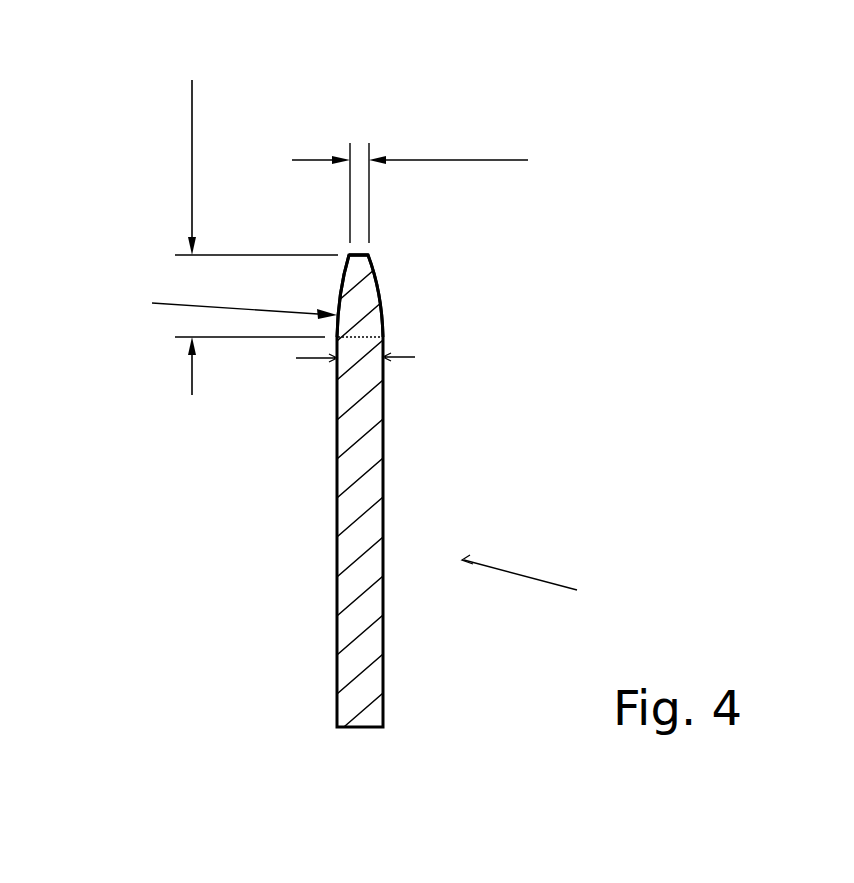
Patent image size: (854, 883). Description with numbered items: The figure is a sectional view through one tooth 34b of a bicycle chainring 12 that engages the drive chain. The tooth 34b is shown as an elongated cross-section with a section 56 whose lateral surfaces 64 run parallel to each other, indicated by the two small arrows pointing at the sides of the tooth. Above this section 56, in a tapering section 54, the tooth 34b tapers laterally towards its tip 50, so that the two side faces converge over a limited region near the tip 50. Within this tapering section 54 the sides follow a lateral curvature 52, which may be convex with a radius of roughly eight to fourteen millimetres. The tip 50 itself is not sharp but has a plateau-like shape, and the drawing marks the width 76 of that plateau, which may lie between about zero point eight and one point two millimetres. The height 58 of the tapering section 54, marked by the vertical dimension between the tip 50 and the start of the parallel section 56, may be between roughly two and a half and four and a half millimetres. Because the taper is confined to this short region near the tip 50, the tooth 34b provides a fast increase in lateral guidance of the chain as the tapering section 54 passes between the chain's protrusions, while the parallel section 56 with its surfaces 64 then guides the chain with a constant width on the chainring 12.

The chainring 12 is at (547, 583).
The tooth 34b is at (383, 403).
The tip 50 is at (362, 253).
The lateral curvature 52 is at (225, 303).
The tapering section 54 is at (367, 297).
The section with parallel lateral surfaces 56 is at (357, 383).
The height of the tapering section 58 is at (192, 128).
The parallel lateral surfaces 64 is at (358, 358).
The width of the plateau 76 is at (449, 160).